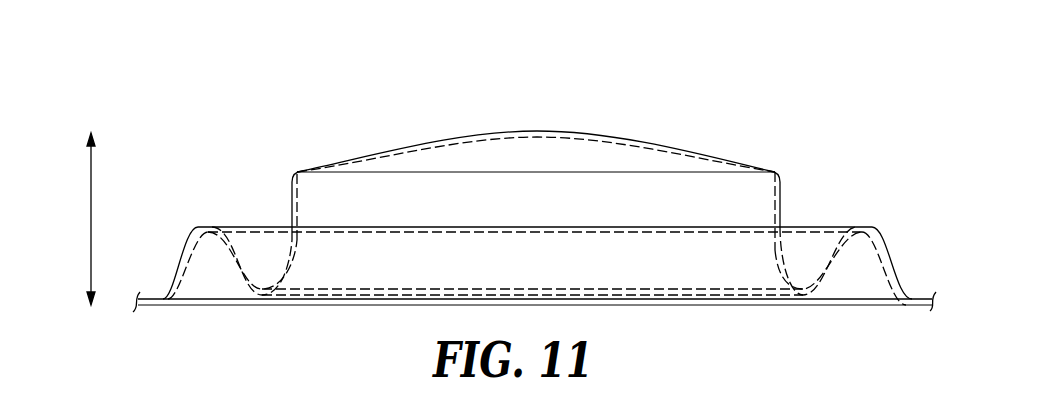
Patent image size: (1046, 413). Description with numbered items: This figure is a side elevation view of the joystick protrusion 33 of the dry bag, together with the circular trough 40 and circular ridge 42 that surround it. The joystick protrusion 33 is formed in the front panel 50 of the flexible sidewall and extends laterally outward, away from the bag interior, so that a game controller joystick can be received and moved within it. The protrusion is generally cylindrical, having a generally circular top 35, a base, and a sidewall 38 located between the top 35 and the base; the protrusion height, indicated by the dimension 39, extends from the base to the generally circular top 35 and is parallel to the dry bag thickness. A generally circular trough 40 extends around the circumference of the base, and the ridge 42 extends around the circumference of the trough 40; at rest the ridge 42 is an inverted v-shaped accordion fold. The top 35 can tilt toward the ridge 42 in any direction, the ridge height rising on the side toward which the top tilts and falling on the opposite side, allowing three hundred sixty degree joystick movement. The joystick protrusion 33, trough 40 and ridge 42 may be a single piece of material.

The joystick protrusion 33 is at (838, 87).
The generally circular top 35 is at (538, 131).
The sidewall 38 is at (291, 182).
The height 39 is at (90, 245).
The generally circular trough 40 is at (263, 263).
The ridge 42 is at (199, 227).
The front panel 50 is at (931, 298).